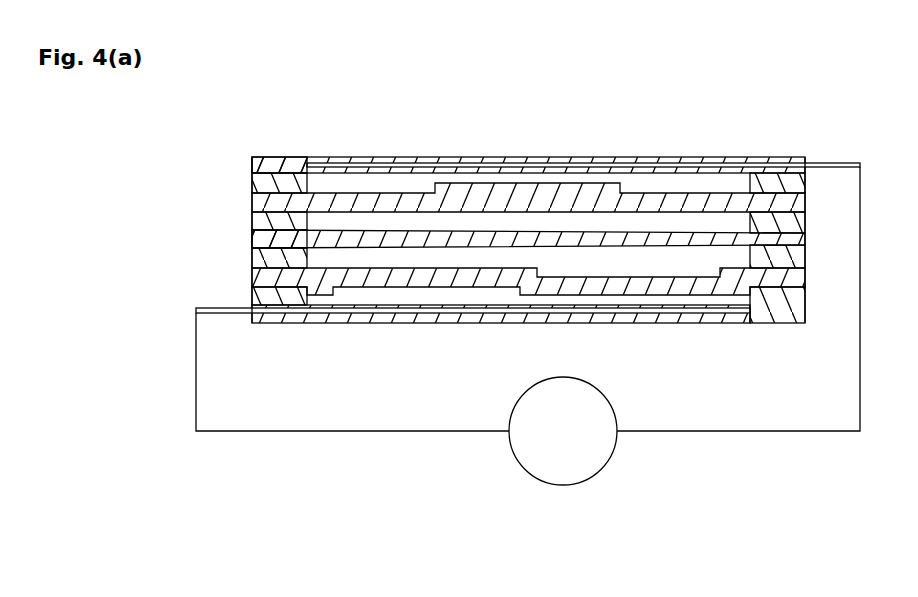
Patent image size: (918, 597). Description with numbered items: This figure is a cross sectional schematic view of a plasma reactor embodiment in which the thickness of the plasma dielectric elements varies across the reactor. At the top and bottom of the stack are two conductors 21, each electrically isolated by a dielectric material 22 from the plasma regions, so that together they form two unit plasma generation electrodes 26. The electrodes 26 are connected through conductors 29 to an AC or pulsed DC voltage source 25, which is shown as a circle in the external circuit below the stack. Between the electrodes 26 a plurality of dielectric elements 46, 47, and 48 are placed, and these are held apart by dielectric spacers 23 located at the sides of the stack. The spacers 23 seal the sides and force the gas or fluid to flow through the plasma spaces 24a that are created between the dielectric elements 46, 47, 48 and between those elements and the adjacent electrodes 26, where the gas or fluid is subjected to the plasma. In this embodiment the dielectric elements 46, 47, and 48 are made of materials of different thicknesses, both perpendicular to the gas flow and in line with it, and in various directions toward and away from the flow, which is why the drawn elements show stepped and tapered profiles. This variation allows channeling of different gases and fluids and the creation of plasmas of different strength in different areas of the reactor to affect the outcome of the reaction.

The conductor 21 is at (828, 163).
The dielectric material 22 is at (285, 162).
The dielectric spacer 23 is at (268, 180).
The plasma space 24a is at (722, 257).
The AC or pulsed DC voltage source 25 is at (598, 448).
The unit plasma generation electrode 26 is at (597, 157).
The conductor 29 is at (232, 432).
The dielectric element 46 is at (790, 205).
The dielectric element 47 is at (268, 240).
The dielectric element 48 is at (785, 279).